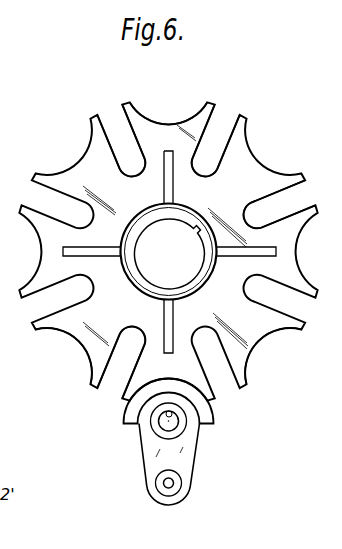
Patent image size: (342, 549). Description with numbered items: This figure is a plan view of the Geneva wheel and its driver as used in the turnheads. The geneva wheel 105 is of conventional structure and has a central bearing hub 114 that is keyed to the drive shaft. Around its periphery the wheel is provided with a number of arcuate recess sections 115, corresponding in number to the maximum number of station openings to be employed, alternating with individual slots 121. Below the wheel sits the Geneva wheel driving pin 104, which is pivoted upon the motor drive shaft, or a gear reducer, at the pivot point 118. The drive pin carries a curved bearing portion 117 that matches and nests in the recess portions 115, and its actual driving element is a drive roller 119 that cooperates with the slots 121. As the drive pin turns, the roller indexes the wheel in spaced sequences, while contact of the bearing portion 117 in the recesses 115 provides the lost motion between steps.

The Geneva wheel driving pin 104 is at (137, 462).
The Geneva wheel 105 is at (252, 145).
The bearing hub 114 is at (214, 262).
The arcuate recess sections 115 is at (161, 119).
The curved bearing portion 117 is at (208, 410).
The pivot point 118 is at (178, 425).
The drive roller 119 is at (180, 485).
The slots 121 is at (106, 116).